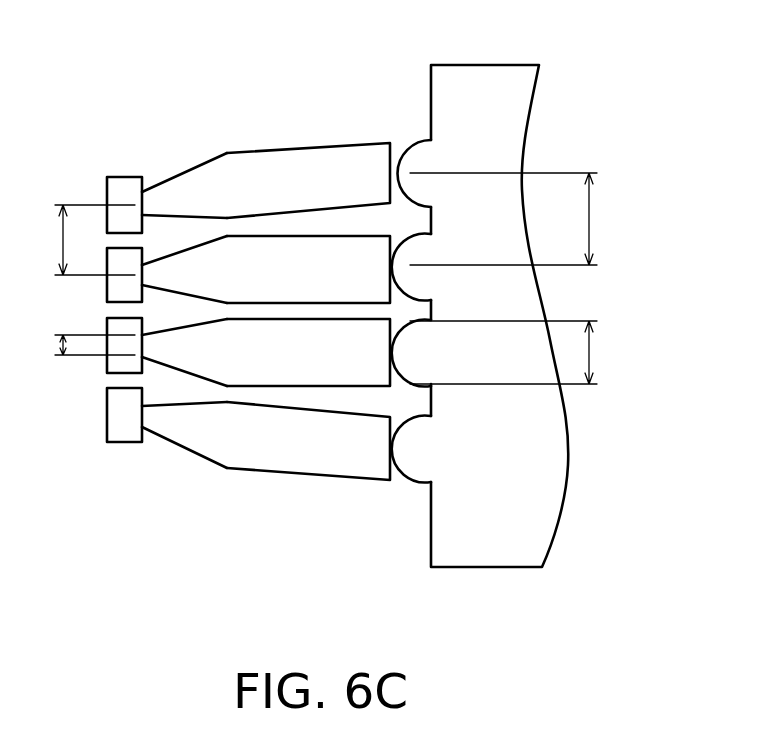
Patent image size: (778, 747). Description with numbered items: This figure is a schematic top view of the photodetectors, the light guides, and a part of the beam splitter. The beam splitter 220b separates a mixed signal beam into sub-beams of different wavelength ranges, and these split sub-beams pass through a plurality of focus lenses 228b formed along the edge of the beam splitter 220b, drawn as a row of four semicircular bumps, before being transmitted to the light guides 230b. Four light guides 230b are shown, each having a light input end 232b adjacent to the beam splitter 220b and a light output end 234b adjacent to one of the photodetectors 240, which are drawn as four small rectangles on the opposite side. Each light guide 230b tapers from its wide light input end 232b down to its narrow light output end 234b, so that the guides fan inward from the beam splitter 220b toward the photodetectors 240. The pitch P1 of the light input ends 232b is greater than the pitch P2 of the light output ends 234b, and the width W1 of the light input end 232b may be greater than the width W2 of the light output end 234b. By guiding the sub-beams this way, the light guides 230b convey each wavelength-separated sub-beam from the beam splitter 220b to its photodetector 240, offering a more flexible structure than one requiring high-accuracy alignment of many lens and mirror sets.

The beam splitter 220b is at (552, 460).
The focus lenses 228b is at (427, 157).
The light guides 230b is at (206, 269).
The light input end 232b is at (375, 170).
The light output end 234b is at (158, 200).
The photodetectors 240 is at (123, 185).
The pitch of the light input ends P1 is at (516, 219).
The pitch of the light output ends P2 is at (80, 240).
The width of the light input end W1 is at (516, 352).
The width of the light output end W2 is at (76, 347).